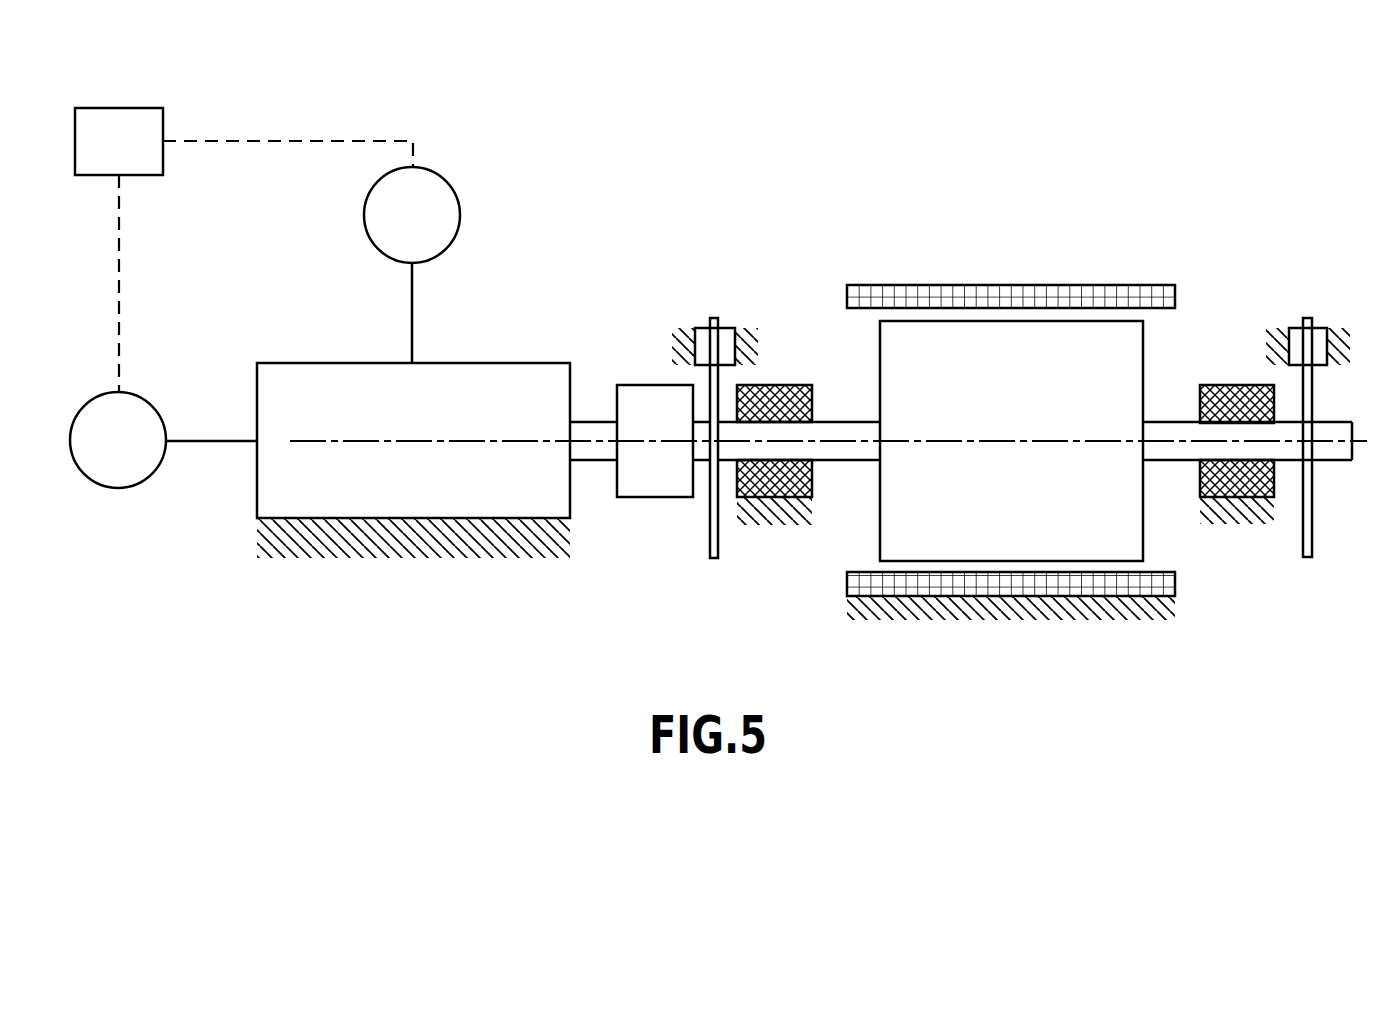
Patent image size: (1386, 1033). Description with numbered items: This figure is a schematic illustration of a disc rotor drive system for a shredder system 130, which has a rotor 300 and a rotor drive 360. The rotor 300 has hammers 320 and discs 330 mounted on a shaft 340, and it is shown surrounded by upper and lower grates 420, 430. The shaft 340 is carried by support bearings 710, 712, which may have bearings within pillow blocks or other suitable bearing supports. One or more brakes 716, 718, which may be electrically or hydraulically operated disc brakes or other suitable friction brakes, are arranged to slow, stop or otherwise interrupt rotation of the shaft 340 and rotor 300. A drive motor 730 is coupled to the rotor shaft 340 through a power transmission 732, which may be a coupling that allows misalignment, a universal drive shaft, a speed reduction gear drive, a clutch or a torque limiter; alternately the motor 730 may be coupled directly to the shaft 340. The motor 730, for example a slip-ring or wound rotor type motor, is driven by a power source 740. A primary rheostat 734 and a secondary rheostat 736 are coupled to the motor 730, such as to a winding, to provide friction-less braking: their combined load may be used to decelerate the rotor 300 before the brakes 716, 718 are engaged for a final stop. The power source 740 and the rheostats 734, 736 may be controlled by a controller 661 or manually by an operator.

The shredder system 130 is at (1200, 84).
The rotor 300 is at (1005, 221).
The rotor drive 360 is at (583, 184).
The controller 661 is at (244, 250).
The primary rheostat 734 is at (456, 231).
The secondary rheostat 736 is at (453, 188).
The power source 740 is at (95, 483).
The drive motor 730 is at (257, 503).
The power transmission 732 is at (655, 497).
The brake 716 is at (712, 318).
The support bearing 710 is at (790, 497).
The shaft 340 is at (839, 421).
The hammers 320 is at (1071, 437).
The discs 330 is at (1205, 342).
The upper grate 430 is at (1176, 292).
The lower grate 420 is at (1175, 588).
The support bearing 712 is at (1210, 485).
The brake 718 is at (1306, 318).